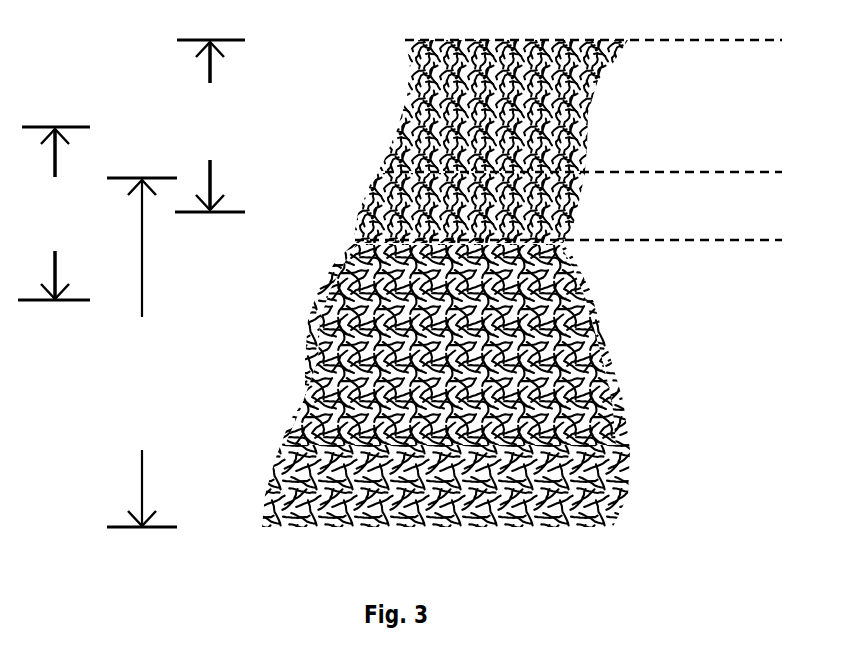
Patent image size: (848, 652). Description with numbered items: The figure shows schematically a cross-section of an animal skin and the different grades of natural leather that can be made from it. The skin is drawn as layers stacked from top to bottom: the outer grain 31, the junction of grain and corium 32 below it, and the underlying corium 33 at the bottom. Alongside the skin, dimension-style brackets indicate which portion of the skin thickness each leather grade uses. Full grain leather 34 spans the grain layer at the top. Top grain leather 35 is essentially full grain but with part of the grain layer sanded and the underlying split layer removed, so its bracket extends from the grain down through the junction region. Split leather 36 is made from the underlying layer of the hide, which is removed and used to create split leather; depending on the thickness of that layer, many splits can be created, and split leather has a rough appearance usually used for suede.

The grain 31 is at (580, 106).
The junction of grain and corium 32 is at (567, 208).
The corium 33 is at (496, 385).
The full grain leather 34 is at (210, 126).
The top grain leather 35 is at (54, 213).
The split leather 36 is at (142, 352).